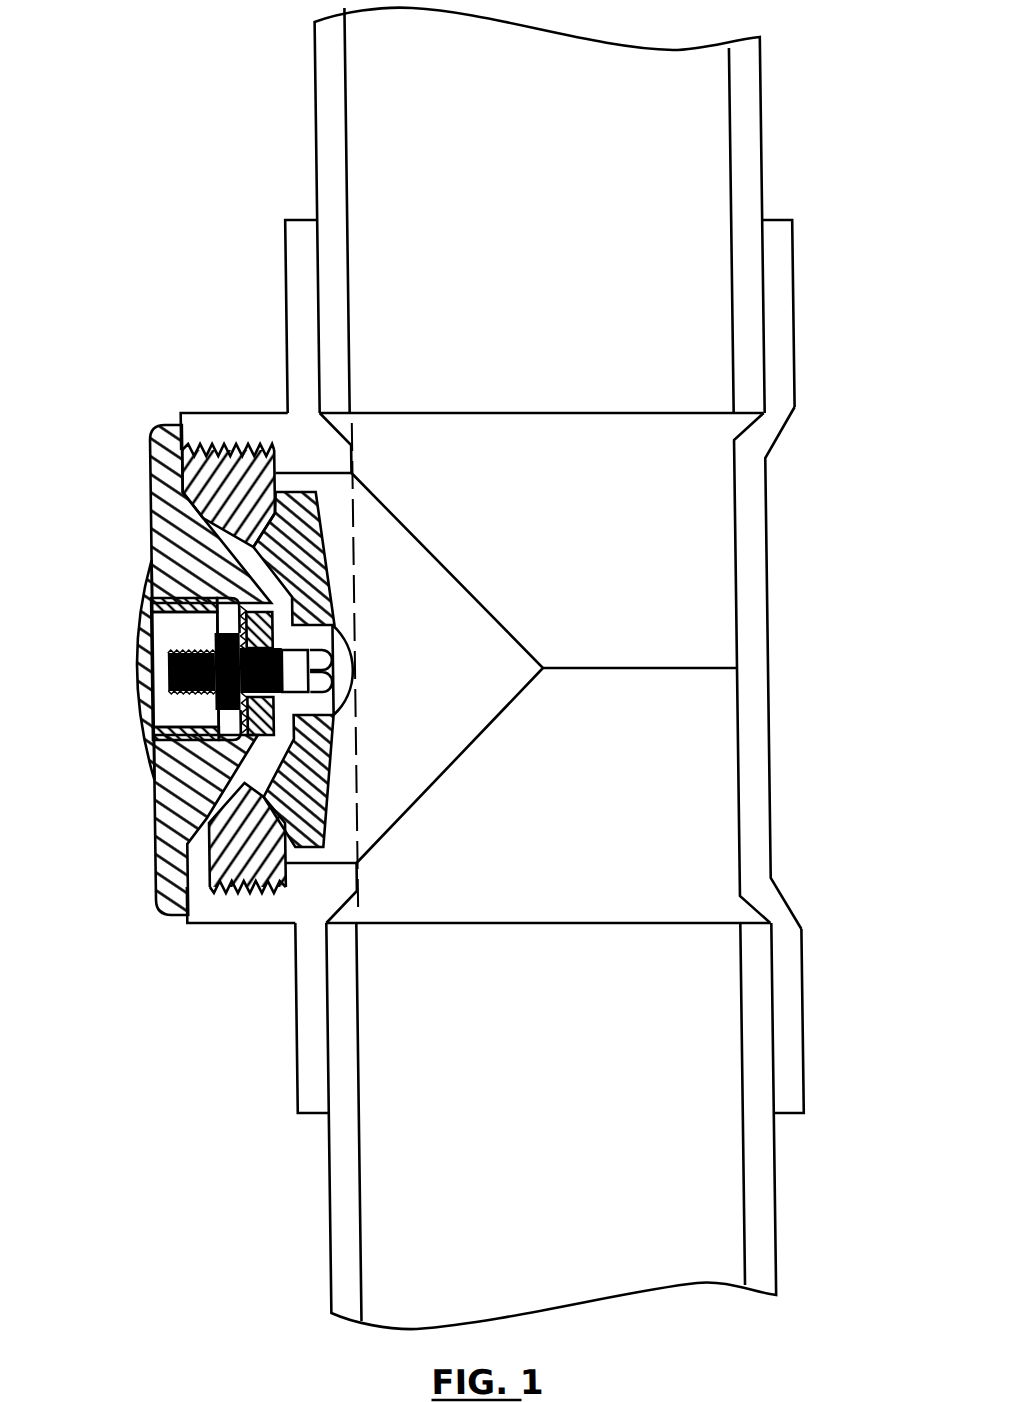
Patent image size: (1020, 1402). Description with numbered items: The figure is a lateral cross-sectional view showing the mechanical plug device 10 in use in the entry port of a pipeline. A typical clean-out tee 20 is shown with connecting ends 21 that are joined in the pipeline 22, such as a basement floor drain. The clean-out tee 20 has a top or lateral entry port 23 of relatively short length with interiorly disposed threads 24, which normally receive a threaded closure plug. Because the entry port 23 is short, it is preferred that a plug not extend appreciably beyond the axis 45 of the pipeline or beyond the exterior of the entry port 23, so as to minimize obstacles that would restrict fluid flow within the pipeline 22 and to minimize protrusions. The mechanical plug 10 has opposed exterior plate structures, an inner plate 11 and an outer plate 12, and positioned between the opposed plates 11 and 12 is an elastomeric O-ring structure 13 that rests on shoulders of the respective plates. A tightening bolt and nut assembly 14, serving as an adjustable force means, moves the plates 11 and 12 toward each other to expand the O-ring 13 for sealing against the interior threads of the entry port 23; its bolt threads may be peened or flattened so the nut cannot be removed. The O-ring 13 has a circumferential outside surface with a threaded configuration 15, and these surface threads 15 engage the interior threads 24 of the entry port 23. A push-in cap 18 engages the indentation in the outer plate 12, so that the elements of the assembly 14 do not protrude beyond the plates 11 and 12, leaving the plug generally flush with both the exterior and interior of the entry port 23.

The mechanical plug device 10 is at (138, 405).
The inner plate structure 11 is at (315, 780).
The outer plate structure 12 is at (170, 525).
The elastomeric O-ring structure 13 is at (211, 440).
The tightening bolt and nut assembly 14 is at (368, 653).
The threaded configuration 15 is at (238, 485).
The push-in cap 18 is at (150, 703).
The clean-out tee 20 is at (790, 633).
The connecting ends 21 is at (299, 267).
The pipeline 22 is at (330, 95).
The entry port 23 is at (250, 908).
The interiorly disposed threads 24 is at (208, 890).
The axis 45 is at (355, 572).